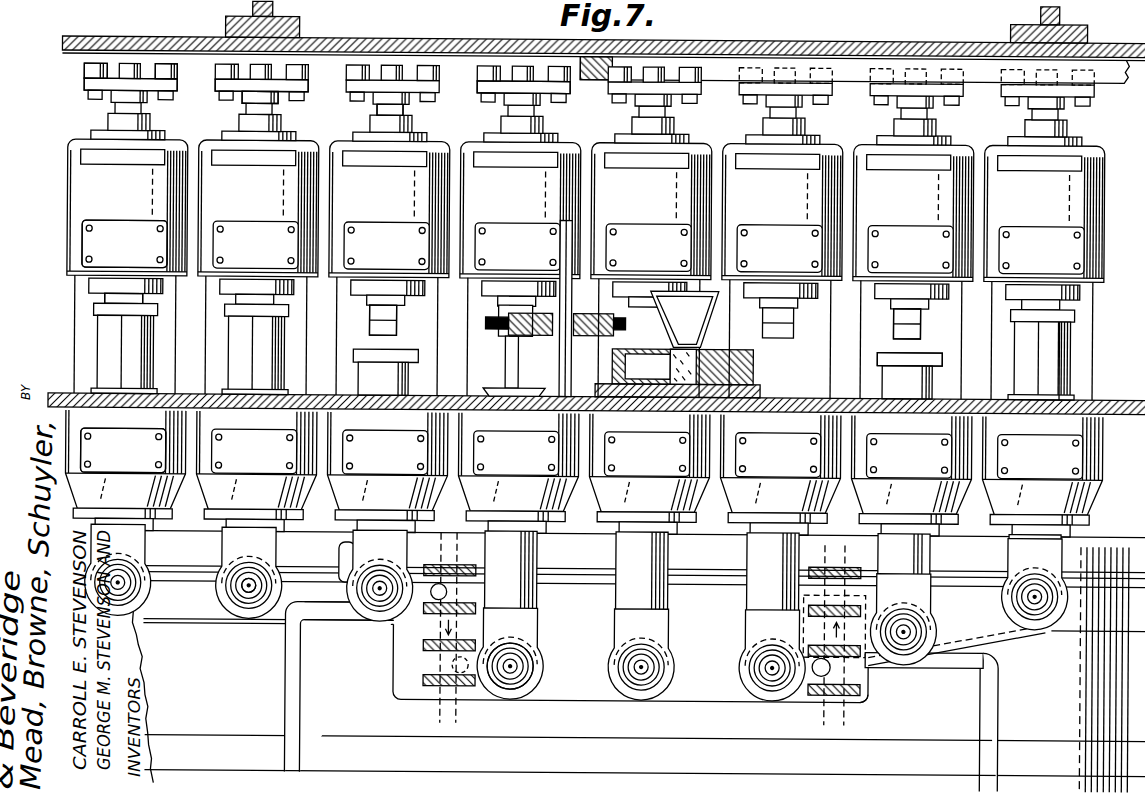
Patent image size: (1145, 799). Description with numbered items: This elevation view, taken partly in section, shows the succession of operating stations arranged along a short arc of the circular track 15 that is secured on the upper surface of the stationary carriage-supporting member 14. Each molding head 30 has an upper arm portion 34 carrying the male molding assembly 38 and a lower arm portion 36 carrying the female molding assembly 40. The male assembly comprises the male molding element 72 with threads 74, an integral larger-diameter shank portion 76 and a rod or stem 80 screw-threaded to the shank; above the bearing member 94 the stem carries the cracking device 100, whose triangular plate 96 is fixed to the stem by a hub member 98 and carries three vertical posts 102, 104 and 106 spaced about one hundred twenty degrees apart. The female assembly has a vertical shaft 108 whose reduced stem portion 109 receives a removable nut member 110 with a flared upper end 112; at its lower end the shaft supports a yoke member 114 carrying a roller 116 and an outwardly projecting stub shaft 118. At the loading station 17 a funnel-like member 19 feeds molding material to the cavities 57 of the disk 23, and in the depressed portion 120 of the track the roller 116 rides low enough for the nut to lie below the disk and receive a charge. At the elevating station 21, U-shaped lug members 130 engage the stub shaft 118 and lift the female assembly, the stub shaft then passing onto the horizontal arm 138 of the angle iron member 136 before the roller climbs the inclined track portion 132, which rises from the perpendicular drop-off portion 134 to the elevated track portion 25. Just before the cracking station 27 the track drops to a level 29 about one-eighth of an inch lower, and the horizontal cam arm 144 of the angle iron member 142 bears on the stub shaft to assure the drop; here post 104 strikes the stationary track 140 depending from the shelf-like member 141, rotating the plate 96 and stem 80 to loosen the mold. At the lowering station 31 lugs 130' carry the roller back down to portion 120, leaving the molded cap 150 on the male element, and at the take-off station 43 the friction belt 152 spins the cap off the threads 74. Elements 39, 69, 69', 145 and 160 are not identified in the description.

The stationary carriage-supporting member 14 is at (648, 761).
The track 15 is at (222, 673).
The loading station 17 is at (723, 319).
The funnel-like member 19 is at (704, 326).
The elevating station 21 is at (856, 692).
The disk 23 is at (745, 371).
The elevated track portion 25 is at (212, 618).
The cracking station 27 is at (390, 26).
The depressed track portion 29 is at (354, 622).
The molding head 30 is at (66, 316).
The lowering station 31 is at (422, 656).
The upper arm portion 34 is at (268, 201).
The lower arm portion 36 is at (260, 428).
The male molding assembly 38 is at (358, 301).
The platen 39 is at (186, 393).
The female molding assembly 40 is at (348, 344).
The cap take-off station 43 is at (586, 339).
The cavity 57 is at (722, 352).
The cover plate 69 is at (238, 244).
The lower cover plate 69' is at (238, 451).
The male molding element 72 is at (634, 322).
The threads 74 is at (790, 326).
The shank portion 76 is at (236, 298).
The rod or stem portion 80 is at (500, 115).
The bearing member 94 is at (376, 115).
The triangular-shaped plate 96 is at (84, 88).
The hub member 98 is at (279, 98).
The cracking device 100 is at (307, 87).
The vertical post member 102 is at (82, 70).
The vertical post member 104 is at (127, 70).
The vertical post member 106 is at (180, 78).
The vertical shaft 108 is at (540, 548).
The stem portion 109 is at (272, 376).
The nut member 110 is at (150, 346).
The flared upper end 112 is at (946, 340).
The yoke member 114 is at (672, 608).
The roller 116 is at (545, 667).
The stub shaft 118 is at (252, 600).
The depressed portion of track 120 is at (594, 700).
The U-shaped lug member 130 is at (819, 640).
The U-shaped lug member 130' is at (422, 612).
The inclined track portion 132 is at (1000, 628).
The drop-off portion 134 is at (874, 690).
The angle iron member 136 is at (1001, 705).
The horizontal arm 138 is at (956, 664).
The stationary track 140 is at (462, 80).
The shelf-like member 141 is at (926, 36).
The angle iron member 142 is at (286, 697).
The horizontal cam arm 144 is at (341, 562).
The rail 145 is at (342, 601).
The molded article 150 is at (510, 333).
The rotating friction belt member 152 is at (550, 332).
The rail 160 is at (718, 78).